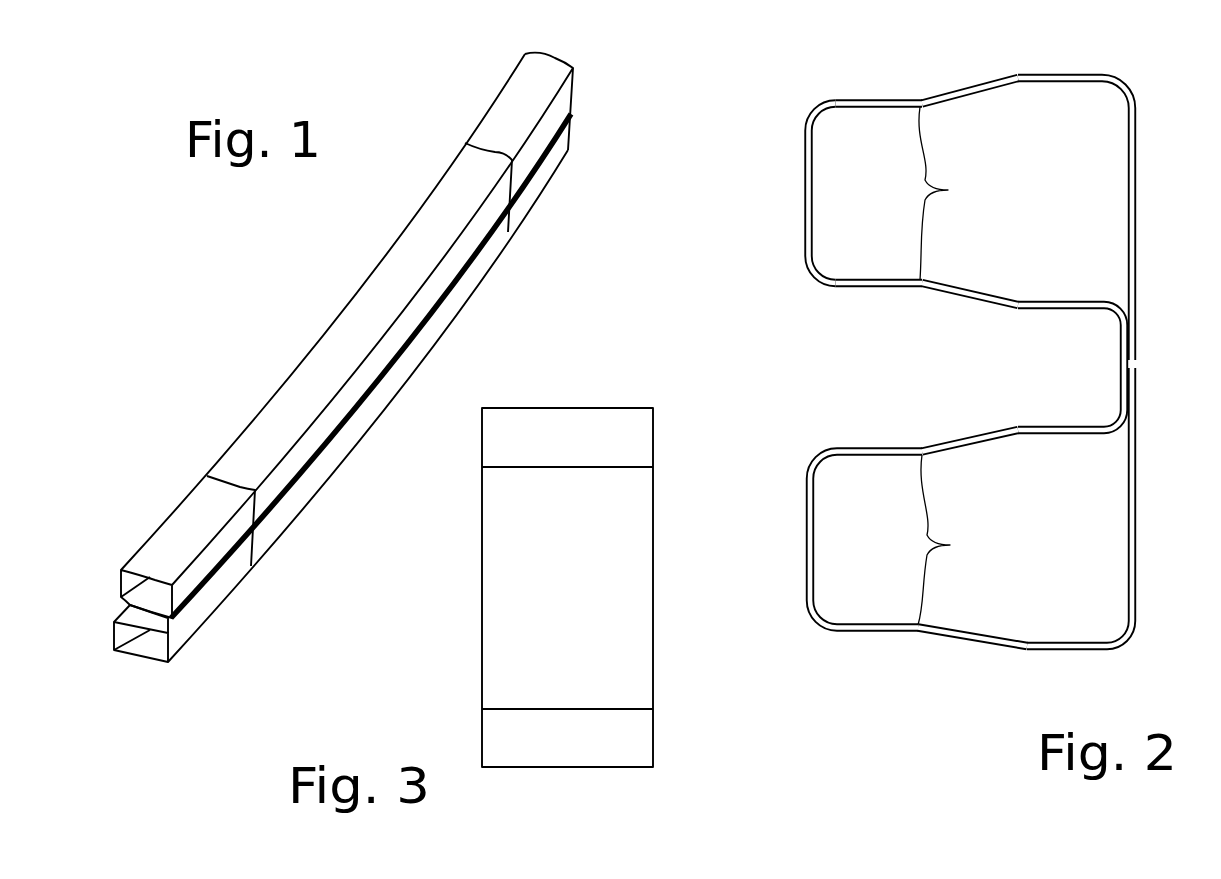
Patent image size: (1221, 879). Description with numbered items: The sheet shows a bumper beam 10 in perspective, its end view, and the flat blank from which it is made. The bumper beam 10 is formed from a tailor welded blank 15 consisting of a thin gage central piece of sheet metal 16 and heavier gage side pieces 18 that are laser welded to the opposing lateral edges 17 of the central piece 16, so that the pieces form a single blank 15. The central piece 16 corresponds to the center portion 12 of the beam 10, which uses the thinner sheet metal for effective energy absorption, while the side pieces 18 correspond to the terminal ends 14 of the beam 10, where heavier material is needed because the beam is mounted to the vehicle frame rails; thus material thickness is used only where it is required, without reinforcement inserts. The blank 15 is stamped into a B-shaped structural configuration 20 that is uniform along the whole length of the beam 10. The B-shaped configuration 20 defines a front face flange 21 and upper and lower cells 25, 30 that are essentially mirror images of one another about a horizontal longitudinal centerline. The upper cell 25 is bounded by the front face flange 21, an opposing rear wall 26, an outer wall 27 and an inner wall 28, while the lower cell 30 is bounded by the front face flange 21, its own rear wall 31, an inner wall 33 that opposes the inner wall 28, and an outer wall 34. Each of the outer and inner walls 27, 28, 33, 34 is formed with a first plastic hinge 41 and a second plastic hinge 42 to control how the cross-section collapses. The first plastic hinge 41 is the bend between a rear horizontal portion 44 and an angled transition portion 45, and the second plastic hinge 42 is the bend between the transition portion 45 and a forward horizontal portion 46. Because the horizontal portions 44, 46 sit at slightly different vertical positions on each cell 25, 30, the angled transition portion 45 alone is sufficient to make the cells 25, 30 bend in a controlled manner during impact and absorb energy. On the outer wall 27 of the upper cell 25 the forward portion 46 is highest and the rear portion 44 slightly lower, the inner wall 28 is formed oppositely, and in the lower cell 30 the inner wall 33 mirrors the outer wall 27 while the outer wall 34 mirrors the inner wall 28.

In FIG. 1, the bumper beam 10 is at (203, 332).
In FIG. 2, the bumper beam 10 is at (757, 312).
In FIG. 1, the center portion 12 is at (377, 313).
In FIG. 1, the terminal ends 14 is at (502, 105).
In FIG. 3, the tailor welded blank 15 is at (453, 553).
In FIG. 3, the central piece of sheet metal 16 is at (492, 603).
In FIG. 1, the opposing lateral edges 17 is at (512, 177).
In FIG. 3, the opposing lateral edges 17 is at (570, 466).
In FIG. 3, the side pieces 18 is at (531, 413).
In FIG. 1, the B-shaped structural configuration 20 is at (133, 683).
In FIG. 2, the B-shaped structural configuration 20 is at (760, 97).
In FIG. 2, the front face flange 21 is at (1135, 185).
In FIG. 2, the upper cell 25 is at (840, 90).
In FIG. 2, the rear wall 26 is at (805, 210).
In FIG. 2, the outer wall 27 is at (1077, 73).
In FIG. 2, the inner wall 28 is at (1077, 300).
In FIG. 2, the lower cell 30 is at (878, 683).
In FIG. 2, the rear wall 31 is at (807, 522).
In FIG. 2, the inner wall 33 is at (1133, 453).
In FIG. 2, the outer wall 34 is at (1097, 655).
In FIG. 2, the first plastic hinge 41 is at (956, 366).
In FIG. 2, the second plastic hinge 42 is at (1015, 75).
In FIG. 2, the rear horizontal portion 44 is at (862, 108).
In FIG. 2, the angled transition portion 45 is at (977, 88).
In FIG. 2, the forward horizontal portion 46 is at (1130, 348).